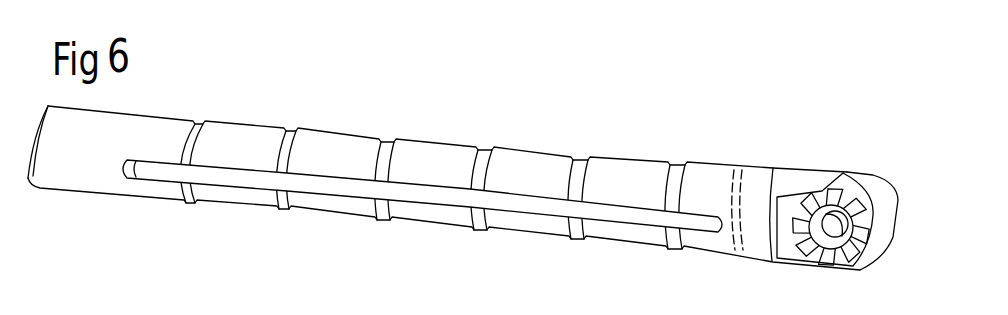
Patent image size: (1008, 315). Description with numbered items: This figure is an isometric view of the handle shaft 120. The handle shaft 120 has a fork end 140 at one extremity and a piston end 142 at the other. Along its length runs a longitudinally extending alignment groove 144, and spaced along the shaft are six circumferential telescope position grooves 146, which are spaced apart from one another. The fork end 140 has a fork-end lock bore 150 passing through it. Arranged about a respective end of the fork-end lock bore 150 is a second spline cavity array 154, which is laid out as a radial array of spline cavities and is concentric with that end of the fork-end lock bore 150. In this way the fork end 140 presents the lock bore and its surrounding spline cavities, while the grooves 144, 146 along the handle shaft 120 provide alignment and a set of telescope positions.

The handle shaft 120 is at (362, 106).
The fork end 140 is at (789, 164).
The piston end 142 is at (30, 181).
The alignment groove 144 is at (214, 178).
The telescope position grooves 146 is at (480, 173).
The fork-end lock bore 150 is at (820, 232).
The second spline cavity array 154 is at (836, 203).